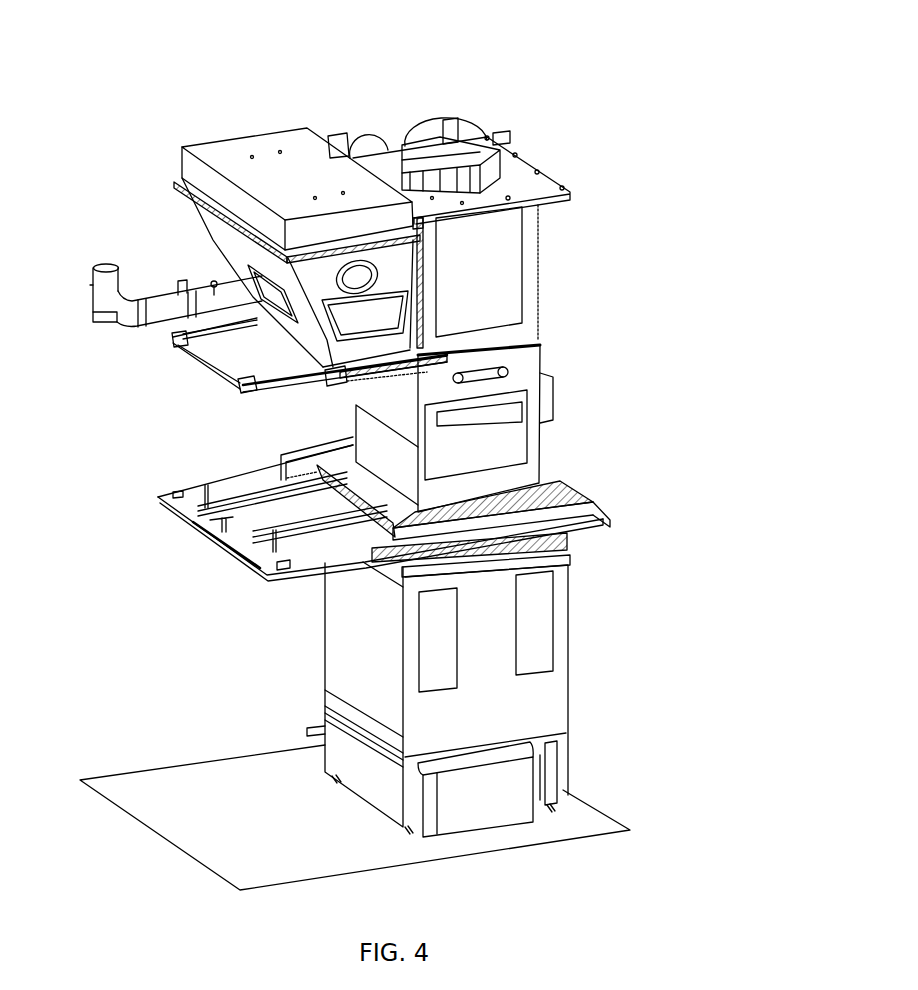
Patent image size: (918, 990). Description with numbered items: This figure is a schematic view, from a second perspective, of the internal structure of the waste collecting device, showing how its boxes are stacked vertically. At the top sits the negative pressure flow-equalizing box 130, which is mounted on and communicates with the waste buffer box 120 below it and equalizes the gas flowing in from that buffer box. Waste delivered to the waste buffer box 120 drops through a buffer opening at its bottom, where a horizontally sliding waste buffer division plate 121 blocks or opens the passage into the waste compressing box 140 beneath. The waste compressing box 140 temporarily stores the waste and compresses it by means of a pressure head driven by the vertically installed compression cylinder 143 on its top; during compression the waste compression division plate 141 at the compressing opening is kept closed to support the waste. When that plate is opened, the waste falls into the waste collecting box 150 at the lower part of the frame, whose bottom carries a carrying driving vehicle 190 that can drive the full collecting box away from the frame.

The negative pressure flow-equalizing box 130 is at (243, 135).
The compression cylinder 143 is at (488, 140).
The waste buffer box 120 is at (380, 312).
The waste compressing box 140 is at (490, 440).
The waste buffer division plate 121 is at (212, 362).
The waste compression division plate 141 is at (190, 527).
The waste collecting box 150 is at (487, 682).
The carrying driving vehicle 190 is at (477, 793).